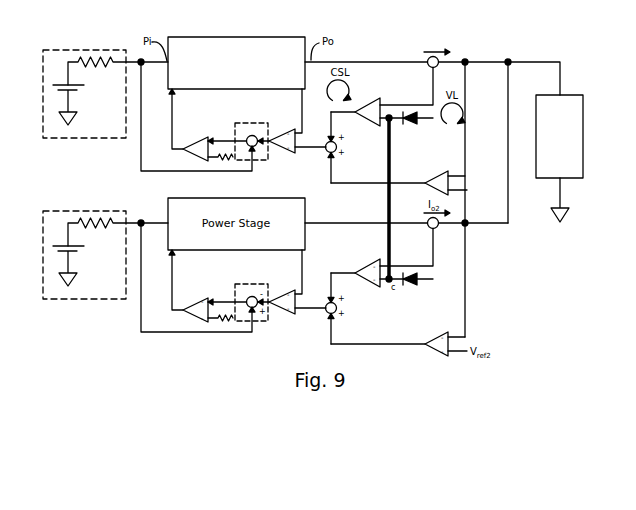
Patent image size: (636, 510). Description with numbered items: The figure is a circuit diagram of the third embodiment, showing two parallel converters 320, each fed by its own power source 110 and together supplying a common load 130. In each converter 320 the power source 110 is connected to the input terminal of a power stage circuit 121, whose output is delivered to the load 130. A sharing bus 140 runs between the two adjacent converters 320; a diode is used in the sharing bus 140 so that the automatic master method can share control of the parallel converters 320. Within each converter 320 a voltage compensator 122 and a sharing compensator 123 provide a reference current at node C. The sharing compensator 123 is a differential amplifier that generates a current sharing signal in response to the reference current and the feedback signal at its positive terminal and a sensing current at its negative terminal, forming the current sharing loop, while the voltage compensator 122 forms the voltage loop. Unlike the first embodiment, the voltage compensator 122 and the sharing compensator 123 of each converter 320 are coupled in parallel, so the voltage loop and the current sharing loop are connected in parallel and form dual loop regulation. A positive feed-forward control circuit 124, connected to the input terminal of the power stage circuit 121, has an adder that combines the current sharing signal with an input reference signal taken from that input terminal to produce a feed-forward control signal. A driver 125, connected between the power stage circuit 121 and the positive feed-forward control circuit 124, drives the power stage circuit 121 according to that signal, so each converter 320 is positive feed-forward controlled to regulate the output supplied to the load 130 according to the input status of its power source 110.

The power source 110 is at (76, 138).
The power stage circuit 121 is at (255, 36).
The voltage compensator 122 is at (447, 171).
The sharing compensator 123 is at (379, 99).
The positive feed-forward control circuit 124 is at (258, 162).
The driver 125 is at (207, 137).
The load 130 is at (573, 95).
The sharing bus 140 is at (388, 148).
The converter 320 is at (368, 52).